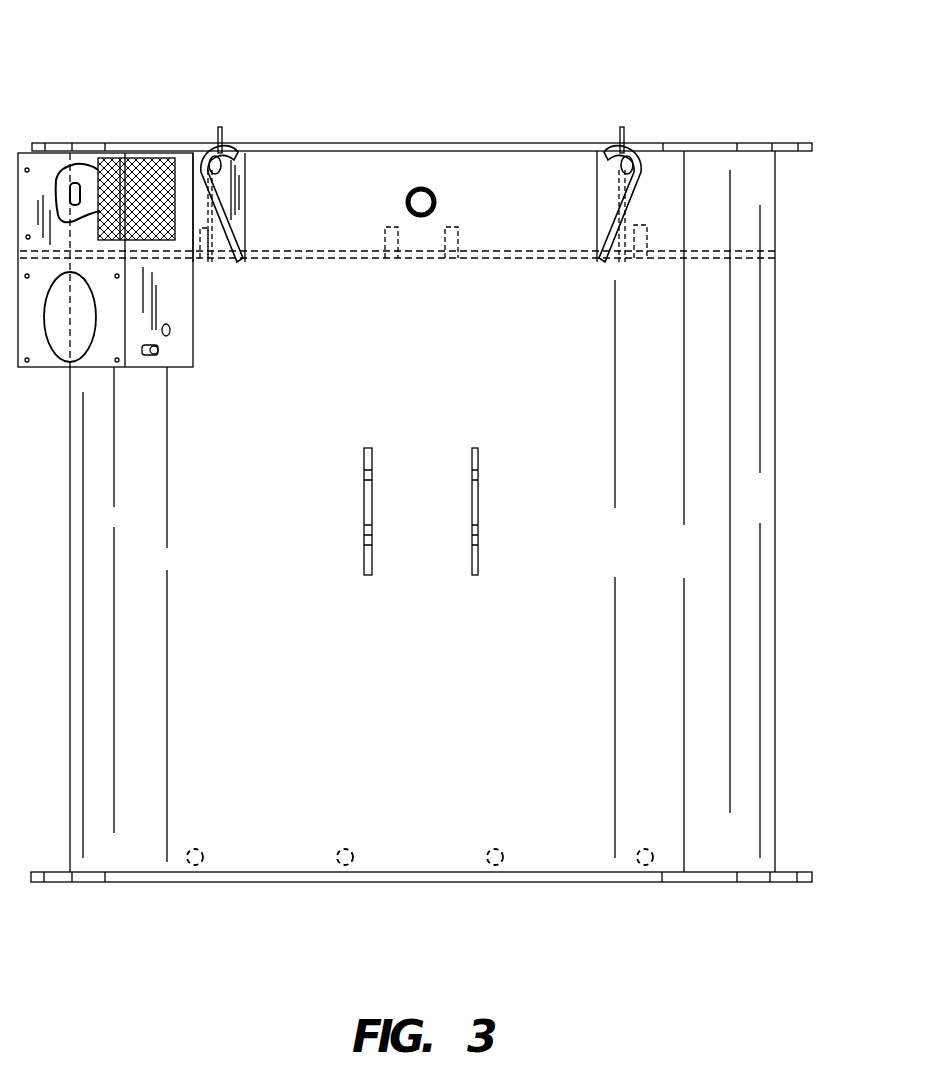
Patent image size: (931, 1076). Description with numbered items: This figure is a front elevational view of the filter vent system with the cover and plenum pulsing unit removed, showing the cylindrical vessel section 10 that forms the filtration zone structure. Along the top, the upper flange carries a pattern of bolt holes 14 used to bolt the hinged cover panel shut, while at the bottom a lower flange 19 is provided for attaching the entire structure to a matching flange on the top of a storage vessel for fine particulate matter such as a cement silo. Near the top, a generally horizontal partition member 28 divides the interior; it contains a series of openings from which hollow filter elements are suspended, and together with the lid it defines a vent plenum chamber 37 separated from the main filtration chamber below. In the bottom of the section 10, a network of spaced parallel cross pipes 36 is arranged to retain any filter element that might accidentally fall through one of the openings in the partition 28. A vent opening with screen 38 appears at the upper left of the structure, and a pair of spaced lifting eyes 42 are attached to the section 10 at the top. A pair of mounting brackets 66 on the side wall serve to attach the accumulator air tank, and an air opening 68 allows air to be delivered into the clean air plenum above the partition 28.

The cylindrical vessel section 10 is at (553, 597).
The bolt holes 14 is at (742, 140).
The lower flange 19 is at (735, 882).
The horizontal partition member 28 is at (310, 258).
The cross pipes 36 is at (345, 868).
The vent plenum chamber 37 is at (460, 170).
The vent opening with screen 38 is at (143, 157).
The lifting eyes 42 is at (215, 145).
The mounting brackets 66 is at (364, 471).
The air opening 68 is at (419, 187).